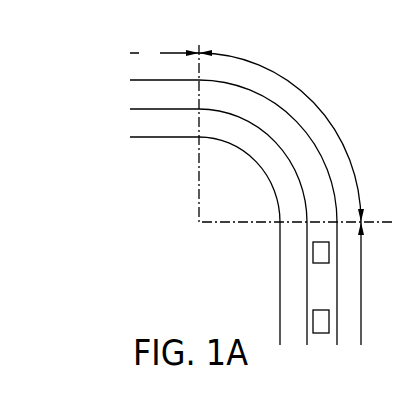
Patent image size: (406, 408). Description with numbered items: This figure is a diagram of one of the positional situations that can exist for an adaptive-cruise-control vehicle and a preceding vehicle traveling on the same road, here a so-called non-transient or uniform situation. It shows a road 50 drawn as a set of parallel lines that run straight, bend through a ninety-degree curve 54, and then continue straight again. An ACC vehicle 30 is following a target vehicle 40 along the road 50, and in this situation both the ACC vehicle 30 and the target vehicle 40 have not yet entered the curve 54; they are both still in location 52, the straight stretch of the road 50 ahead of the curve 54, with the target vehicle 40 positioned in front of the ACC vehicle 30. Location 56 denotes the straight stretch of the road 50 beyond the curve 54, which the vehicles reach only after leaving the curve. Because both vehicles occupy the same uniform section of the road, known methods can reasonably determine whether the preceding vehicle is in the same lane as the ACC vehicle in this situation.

The ACC vehicle 30 is at (313, 318).
The target vehicle 40 is at (313, 250).
The road 50 is at (113, 117).
The location 52 is at (363, 283).
The curve 54 is at (281, 136).
The location 56 is at (164, 53).